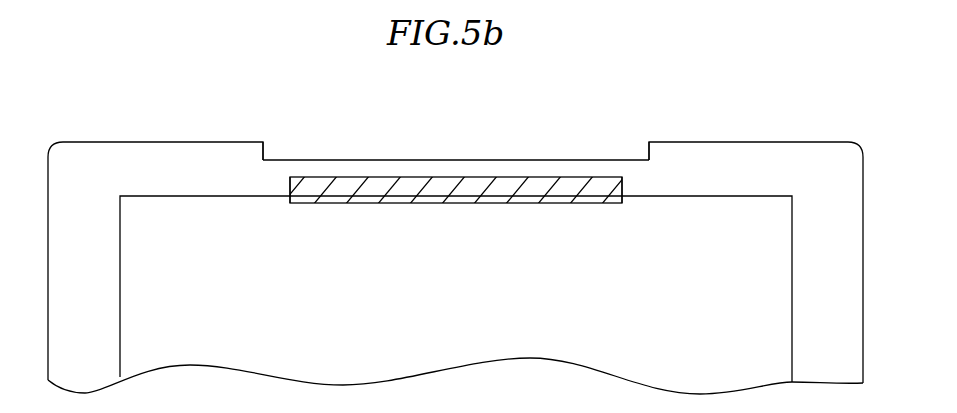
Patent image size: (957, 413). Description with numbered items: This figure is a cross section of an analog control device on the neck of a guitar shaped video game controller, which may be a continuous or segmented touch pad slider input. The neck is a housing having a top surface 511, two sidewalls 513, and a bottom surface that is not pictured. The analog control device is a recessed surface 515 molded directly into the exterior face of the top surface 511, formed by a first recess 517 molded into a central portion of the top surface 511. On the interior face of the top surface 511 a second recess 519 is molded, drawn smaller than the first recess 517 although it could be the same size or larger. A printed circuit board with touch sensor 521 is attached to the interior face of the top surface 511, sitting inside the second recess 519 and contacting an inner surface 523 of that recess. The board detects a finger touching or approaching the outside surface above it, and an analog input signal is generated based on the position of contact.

The top surface 511 is at (175, 142).
The sidewalls 513 is at (122, 293).
The recessed surface 515 is at (400, 160).
The first recess 517 is at (266, 151).
The second recess 519 is at (288, 187).
The printed circuit board with touch sensor 521 is at (490, 203).
The inner surface 523 is at (378, 177).